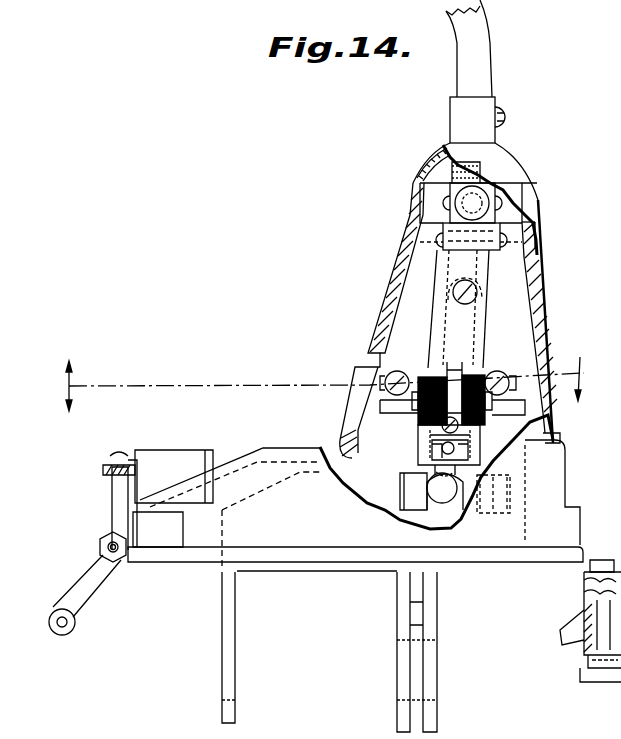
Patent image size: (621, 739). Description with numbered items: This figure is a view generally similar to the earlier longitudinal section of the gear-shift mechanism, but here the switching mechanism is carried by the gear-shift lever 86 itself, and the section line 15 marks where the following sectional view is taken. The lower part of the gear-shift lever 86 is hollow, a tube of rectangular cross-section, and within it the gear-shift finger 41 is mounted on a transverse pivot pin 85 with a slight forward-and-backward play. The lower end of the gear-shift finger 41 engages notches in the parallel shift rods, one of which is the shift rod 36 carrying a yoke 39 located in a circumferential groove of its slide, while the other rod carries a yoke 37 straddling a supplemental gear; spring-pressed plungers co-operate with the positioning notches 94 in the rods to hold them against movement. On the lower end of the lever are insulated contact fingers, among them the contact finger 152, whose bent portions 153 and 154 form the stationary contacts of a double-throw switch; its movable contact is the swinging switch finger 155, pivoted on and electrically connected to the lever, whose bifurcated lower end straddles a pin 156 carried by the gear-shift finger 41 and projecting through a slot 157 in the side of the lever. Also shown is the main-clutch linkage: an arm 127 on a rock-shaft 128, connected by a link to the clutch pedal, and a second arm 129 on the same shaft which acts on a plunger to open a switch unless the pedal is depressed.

The section line 15— 15 is at (322, 384).
The shift rod 36 is at (368, 574).
The yoke 37 is at (440, 688).
The yoke 39 is at (233, 663).
The gear-shift finger 41 is at (444, 497).
The transverse pivot pin 85 is at (455, 295).
The gear-shift lever 86 is at (497, 288).
The positioning notches 94 is at (395, 490).
The arm 127 is at (97, 600).
The rock-shaft 128 is at (98, 550).
The arm 129 is at (120, 503).
The contact finger 152 is at (590, 649).
The bent portion 153 is at (490, 375).
The bent portion 154 is at (417, 367).
The swinging switch finger 155 is at (453, 375).
The pin 156 is at (440, 447).
The slot 157 is at (470, 445).